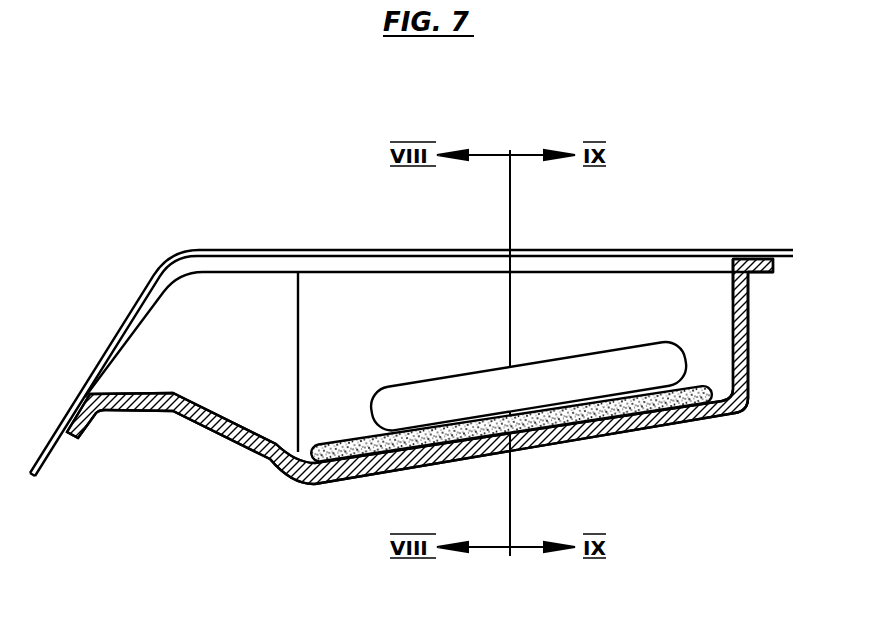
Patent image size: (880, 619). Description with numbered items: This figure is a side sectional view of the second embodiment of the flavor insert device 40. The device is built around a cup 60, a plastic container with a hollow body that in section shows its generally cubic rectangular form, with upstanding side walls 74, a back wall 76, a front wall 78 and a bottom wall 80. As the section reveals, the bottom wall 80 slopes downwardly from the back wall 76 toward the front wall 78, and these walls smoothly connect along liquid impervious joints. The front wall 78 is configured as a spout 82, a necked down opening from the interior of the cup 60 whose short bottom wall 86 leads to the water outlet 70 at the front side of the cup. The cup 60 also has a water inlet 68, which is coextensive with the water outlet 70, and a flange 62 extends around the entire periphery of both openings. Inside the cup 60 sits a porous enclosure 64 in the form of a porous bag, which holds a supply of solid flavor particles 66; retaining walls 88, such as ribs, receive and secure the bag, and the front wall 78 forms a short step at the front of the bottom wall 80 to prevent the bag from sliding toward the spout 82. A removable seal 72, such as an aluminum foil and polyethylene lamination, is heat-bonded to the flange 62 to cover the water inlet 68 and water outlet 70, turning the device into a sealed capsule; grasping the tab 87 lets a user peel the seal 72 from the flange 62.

The flavor insert device 40 is at (766, 389).
The cup 60 is at (377, 478).
The flange 62 is at (757, 273).
The porous enclosure 64 is at (740, 413).
The solid flavor particles 66 is at (390, 450).
The water inlet 68 is at (727, 293).
The water outlet 70 is at (182, 330).
The removable seal 72 is at (143, 292).
The side walls 74 is at (328, 300).
The back wall 76 is at (750, 312).
The front wall 78 is at (280, 450).
The bottom wall 80 is at (687, 425).
The spout 82 is at (148, 362).
The short bottom wall 86 is at (157, 410).
The tab 87 is at (33, 476).
The retaining walls 88 is at (587, 382).